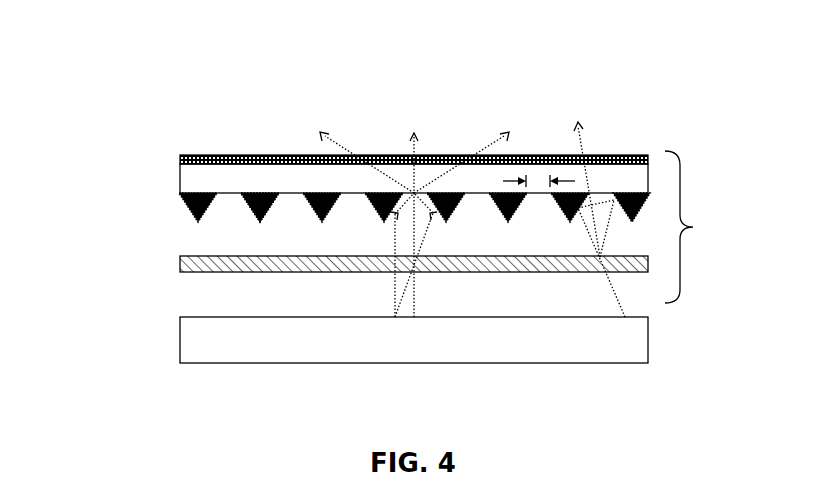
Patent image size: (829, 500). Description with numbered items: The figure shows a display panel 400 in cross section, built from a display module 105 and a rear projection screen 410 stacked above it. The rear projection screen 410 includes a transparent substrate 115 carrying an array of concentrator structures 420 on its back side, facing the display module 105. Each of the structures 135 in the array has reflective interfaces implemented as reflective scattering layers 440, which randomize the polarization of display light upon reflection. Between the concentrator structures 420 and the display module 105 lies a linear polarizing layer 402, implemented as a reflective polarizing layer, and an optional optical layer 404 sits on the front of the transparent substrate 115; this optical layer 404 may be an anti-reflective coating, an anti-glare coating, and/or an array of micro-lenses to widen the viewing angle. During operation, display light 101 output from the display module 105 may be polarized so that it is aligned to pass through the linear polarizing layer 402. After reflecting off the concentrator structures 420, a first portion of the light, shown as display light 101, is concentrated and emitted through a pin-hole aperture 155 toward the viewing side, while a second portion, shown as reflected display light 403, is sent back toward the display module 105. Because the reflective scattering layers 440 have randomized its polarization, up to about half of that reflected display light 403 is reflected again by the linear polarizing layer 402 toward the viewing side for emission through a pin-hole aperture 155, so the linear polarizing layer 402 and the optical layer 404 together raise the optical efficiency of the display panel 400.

The display panel 400 is at (676, 68).
The optical layer 404 is at (180, 160).
The transparent substrate 115 is at (632, 187).
The concentrator structures 420 is at (172, 213).
The structure 135 is at (265, 195).
The reflective scattering layer 440 is at (312, 215).
The linear polarizing layer 402 is at (180, 265).
The display module 105 is at (497, 349).
The display light 101 is at (420, 150).
The pin-hole aperture 155 is at (515, 180).
The reflected display light 403 is at (586, 144).
The rear projection screen 410 is at (732, 227).